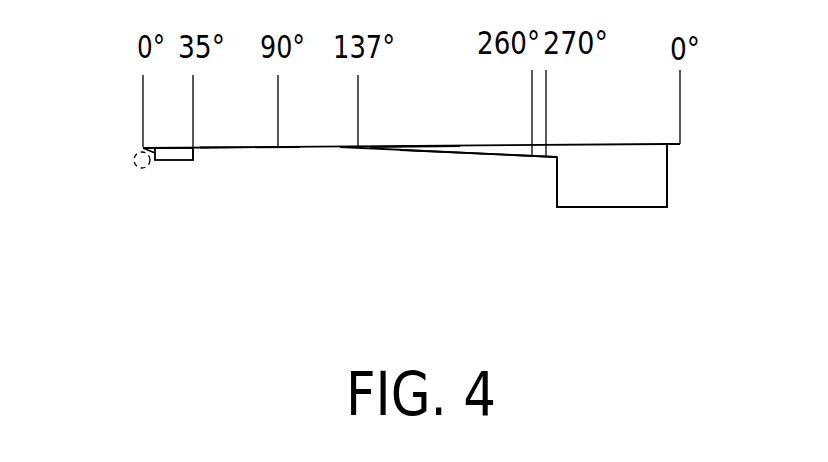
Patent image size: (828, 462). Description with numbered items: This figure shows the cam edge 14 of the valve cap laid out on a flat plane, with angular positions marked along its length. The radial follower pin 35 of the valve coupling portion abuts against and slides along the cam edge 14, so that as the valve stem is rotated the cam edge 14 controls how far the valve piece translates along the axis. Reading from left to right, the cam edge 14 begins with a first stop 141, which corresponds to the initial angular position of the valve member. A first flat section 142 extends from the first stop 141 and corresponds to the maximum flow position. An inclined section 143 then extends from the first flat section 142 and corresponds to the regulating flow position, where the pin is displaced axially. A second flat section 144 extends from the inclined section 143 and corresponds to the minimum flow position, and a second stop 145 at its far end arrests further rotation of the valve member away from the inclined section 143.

The cam edge 14 is at (345, 152).
The follower pin 35 is at (133, 167).
The first stop 141 is at (168, 160).
The first flat section 142 is at (237, 148).
The inclined section 143 is at (423, 153).
The second flat section 144 is at (537, 158).
The second stop 145 is at (582, 192).